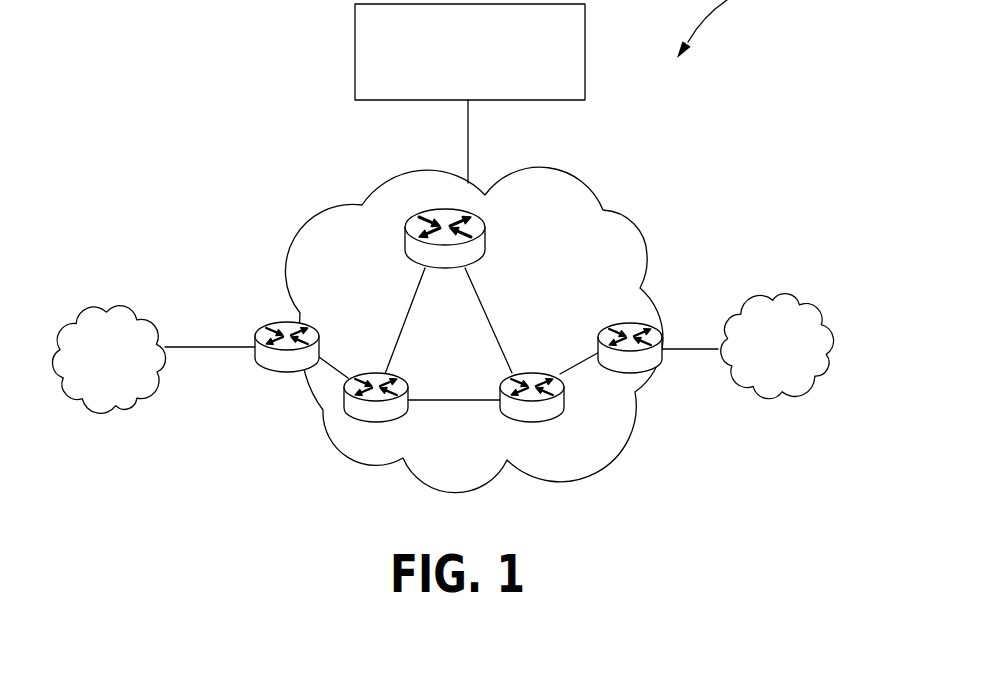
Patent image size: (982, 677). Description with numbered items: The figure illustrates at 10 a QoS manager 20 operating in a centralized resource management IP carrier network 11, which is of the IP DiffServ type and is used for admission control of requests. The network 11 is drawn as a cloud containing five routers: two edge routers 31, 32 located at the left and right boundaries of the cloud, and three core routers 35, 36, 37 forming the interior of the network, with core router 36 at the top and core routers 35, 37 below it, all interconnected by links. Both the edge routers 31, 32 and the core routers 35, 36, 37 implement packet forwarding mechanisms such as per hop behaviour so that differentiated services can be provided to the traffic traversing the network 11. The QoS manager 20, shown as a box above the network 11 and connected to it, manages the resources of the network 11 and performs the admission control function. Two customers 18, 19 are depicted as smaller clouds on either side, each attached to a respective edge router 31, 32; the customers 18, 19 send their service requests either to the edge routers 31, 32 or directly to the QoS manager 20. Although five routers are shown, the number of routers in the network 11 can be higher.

The QoS manager arrangement 10 is at (734, 29).
The IP carrier network 11 is at (648, 254).
The customer 18 is at (127, 373).
The customer 19 is at (797, 362).
The QoS manager 20 is at (355, 38).
The edge router 31 is at (278, 373).
The edge router 32 is at (643, 375).
The core router 35 is at (371, 423).
The core router 36 is at (405, 242).
The core router 37 is at (537, 423).